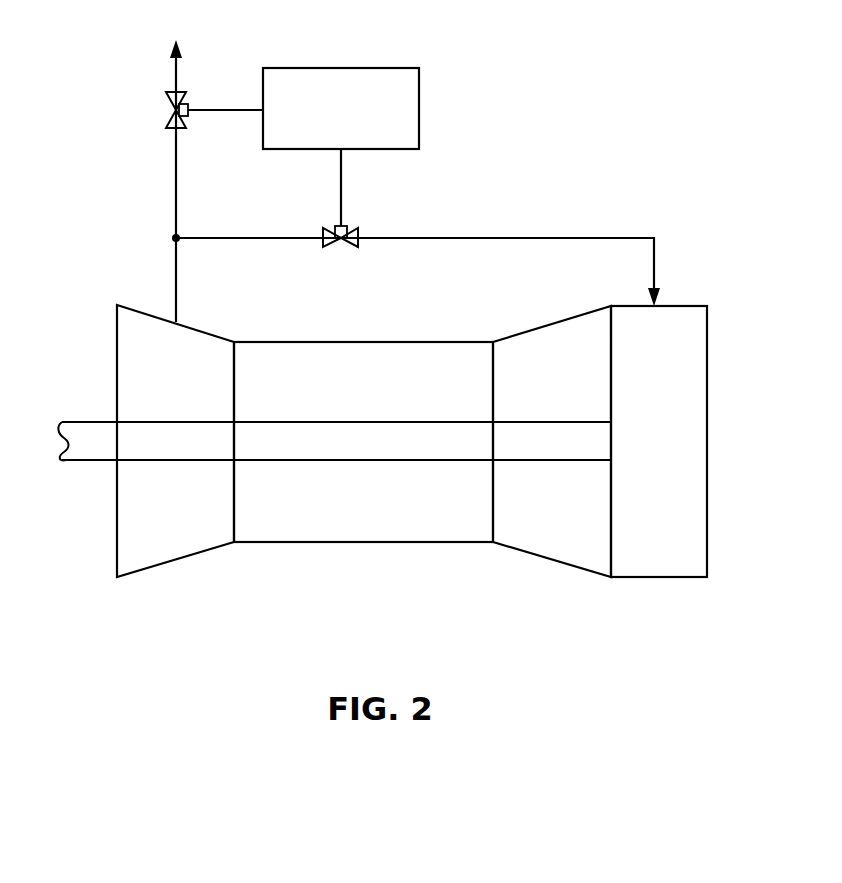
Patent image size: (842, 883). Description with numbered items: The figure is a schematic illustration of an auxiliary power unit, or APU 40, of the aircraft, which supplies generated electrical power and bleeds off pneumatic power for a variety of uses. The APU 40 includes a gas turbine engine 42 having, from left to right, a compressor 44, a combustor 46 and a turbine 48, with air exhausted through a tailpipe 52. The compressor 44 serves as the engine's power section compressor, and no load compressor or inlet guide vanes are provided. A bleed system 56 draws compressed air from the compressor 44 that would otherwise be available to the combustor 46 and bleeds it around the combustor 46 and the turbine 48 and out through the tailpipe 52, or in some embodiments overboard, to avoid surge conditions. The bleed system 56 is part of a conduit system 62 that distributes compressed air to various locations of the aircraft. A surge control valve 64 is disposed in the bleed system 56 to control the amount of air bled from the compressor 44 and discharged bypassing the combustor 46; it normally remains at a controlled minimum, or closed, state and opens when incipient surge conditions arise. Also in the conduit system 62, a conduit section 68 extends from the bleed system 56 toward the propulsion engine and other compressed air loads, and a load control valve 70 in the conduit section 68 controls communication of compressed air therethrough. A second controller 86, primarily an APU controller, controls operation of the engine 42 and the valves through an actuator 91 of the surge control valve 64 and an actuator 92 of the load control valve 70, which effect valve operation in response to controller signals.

The auxiliary power unit (APU) 40 is at (679, 224).
The gas turbine engine 42 is at (385, 569).
The compressor 44 is at (175, 441).
The combustor 46 is at (363, 442).
The turbine 48 is at (552, 441).
The tailpipe 52 is at (659, 441).
The bleed system 56 is at (226, 238).
The conduit system 62 is at (172, 211).
The surge control valve 64 is at (351, 236).
The conduit section 68 is at (175, 72).
The load control valve 70 is at (172, 98).
The second controller 86 is at (341, 108).
The actuator 91 is at (346, 226).
The actuator 92 is at (188, 103).